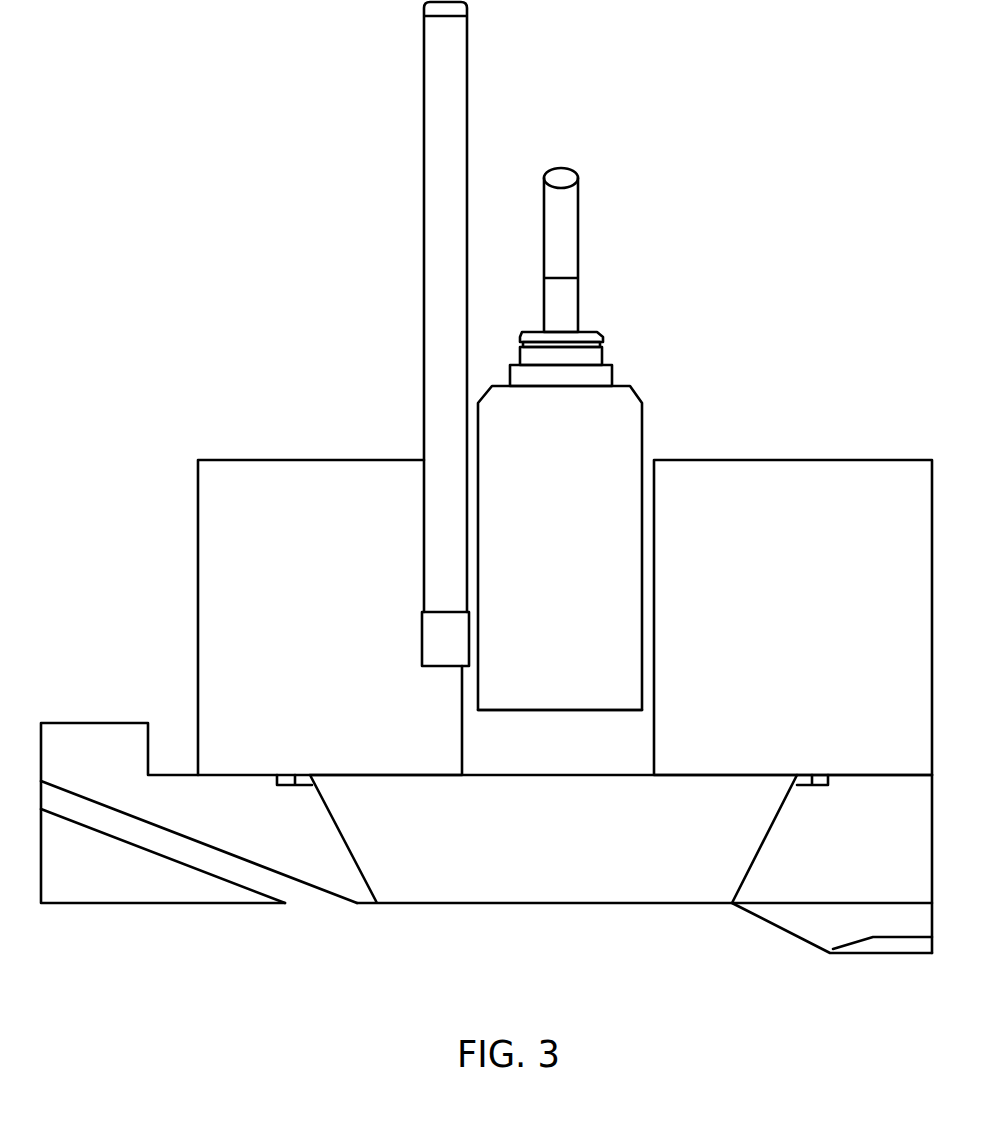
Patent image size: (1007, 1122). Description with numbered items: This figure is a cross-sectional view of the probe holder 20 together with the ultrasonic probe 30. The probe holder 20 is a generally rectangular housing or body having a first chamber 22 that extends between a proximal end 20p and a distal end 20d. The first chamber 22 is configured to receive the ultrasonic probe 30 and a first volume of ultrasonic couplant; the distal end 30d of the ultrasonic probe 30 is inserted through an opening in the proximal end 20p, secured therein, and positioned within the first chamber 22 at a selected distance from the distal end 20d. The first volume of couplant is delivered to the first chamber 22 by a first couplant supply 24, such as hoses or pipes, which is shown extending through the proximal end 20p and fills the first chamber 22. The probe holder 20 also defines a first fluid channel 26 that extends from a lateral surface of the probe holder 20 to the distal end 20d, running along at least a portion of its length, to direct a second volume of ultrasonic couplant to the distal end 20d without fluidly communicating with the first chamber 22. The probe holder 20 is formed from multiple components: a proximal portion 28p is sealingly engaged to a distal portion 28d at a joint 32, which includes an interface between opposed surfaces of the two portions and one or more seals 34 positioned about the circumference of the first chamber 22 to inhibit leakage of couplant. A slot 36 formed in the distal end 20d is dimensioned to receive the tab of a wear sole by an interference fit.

The probe holder 20 is at (318, 352).
The proximal end 20p is at (803, 428).
The distal end 20d is at (213, 923).
The first chamber 22 is at (575, 818).
The first couplant supply 24 is at (438, 86).
The first fluid channel 26 is at (75, 808).
The proximal portion 28p is at (345, 622).
The distal portion 28d is at (889, 855).
The ultrasonic probe 30 is at (577, 557).
The distal end of the ultrasonic probe 30d is at (560, 710).
The joint 32 is at (877, 775).
The seals 34 is at (287, 775).
The slot 36 is at (908, 919).